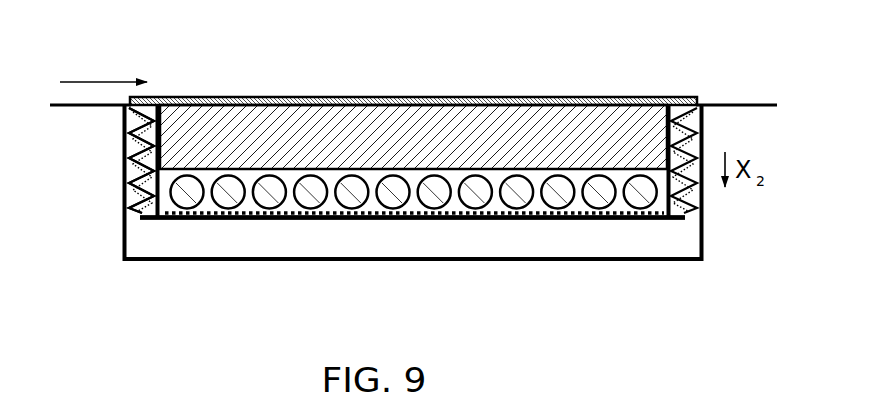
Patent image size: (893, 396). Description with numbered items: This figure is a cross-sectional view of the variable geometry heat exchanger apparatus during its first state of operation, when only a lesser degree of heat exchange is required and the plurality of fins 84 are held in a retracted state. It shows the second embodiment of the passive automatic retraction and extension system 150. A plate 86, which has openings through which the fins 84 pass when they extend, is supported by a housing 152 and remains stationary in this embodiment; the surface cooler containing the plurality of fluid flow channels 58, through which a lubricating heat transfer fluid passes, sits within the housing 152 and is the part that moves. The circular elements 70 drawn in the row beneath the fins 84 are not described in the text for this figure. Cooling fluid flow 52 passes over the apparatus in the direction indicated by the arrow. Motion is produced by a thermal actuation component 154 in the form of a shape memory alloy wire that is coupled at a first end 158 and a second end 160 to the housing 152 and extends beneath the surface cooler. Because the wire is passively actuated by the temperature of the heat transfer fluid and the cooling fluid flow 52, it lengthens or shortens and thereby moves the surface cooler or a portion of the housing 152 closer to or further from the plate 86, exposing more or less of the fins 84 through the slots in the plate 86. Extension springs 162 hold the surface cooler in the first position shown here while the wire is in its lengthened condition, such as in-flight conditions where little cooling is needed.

The cooling fluid flow 52 is at (107, 78).
The fluid flow channels 58 is at (378, 203).
The cells 70 is at (244, 208).
The fins 84 is at (592, 125).
The plate 86 is at (530, 97).
The passive automatic retraction and extension system 150 is at (651, 232).
The housing 152 is at (141, 248).
The thermal actuation component 154 is at (517, 222).
The first end 158 is at (125, 108).
The second end 160 is at (704, 108).
The extension springs 162 is at (130, 188).